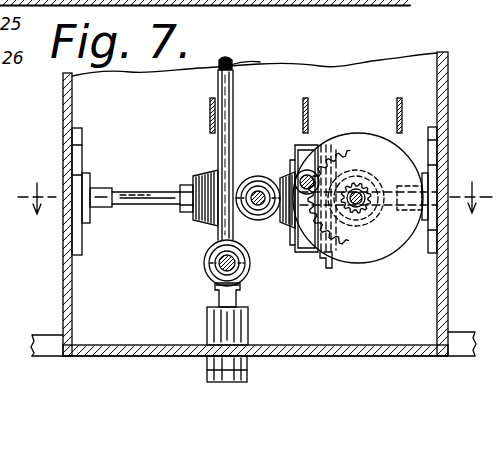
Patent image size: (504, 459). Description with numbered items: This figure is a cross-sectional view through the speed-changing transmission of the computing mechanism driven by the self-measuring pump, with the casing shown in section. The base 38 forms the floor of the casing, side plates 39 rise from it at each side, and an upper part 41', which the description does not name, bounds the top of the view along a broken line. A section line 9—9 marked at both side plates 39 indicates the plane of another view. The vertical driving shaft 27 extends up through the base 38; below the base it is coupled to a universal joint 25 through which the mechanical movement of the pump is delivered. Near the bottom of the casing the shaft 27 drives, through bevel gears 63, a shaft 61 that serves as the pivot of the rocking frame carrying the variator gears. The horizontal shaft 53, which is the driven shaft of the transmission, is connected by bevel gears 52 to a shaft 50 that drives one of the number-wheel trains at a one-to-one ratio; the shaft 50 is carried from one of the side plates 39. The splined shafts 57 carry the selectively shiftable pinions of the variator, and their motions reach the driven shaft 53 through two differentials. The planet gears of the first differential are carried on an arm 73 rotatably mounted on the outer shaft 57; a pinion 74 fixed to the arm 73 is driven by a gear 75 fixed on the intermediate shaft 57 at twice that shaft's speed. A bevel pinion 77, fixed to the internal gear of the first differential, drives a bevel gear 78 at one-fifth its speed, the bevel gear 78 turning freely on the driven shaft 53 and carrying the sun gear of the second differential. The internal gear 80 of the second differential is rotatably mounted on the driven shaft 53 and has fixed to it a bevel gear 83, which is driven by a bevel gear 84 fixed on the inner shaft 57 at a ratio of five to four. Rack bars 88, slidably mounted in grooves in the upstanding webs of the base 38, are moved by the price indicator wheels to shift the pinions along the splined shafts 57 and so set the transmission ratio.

The section line 9- 9 is at (255, 184).
The universal joint 25 is at (247, 373).
The vertical shaft 27 is at (233, 83).
The base 38 is at (146, 350).
The side plates 39 is at (63, 103).
The cover 41' is at (254, 56).
The shaft 50 is at (254, 52).
The bevel gears 52 is at (196, 172).
The horizontal shaft 53 is at (165, 206).
The splined shaft 57 is at (262, 192).
The shaft 61 is at (210, 263).
The bevel gears 63 is at (214, 288).
The arm 73 is at (390, 250).
The pinion 74 is at (362, 190).
The gear 75 is at (322, 168).
The bevel pinion 77 is at (346, 226).
The bevel gear 78 is at (330, 262).
The internal gear 80 is at (324, 264).
The bevel gear 83 is at (290, 245).
The bevel gear 84 is at (274, 218).
The bar 88 is at (210, 112).